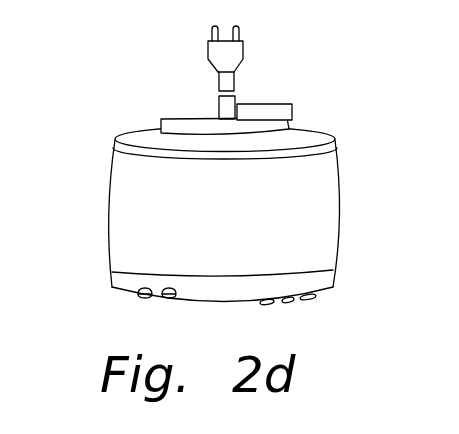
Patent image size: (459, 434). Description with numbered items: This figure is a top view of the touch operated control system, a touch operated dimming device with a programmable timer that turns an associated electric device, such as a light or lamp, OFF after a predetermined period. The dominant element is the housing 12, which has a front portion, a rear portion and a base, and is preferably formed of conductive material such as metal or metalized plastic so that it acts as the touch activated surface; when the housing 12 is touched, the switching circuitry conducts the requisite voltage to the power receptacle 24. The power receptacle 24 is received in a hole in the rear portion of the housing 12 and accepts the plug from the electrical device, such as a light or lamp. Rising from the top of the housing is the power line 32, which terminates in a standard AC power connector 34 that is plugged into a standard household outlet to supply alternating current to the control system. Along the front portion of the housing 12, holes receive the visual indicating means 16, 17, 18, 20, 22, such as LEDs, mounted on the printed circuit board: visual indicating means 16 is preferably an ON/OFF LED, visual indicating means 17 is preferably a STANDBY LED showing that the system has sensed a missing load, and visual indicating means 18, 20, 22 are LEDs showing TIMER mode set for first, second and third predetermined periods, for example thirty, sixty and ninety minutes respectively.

The housing 12 is at (116, 192).
The visual indicating means 16 is at (143, 298).
The visual indicating means 17 is at (167, 298).
The visual indicating means 18 is at (262, 305).
The visual indicating means 20 is at (284, 303).
The visual indicating means 22 is at (316, 298).
The power receptacle 24 is at (270, 110).
The power line 32 is at (220, 80).
The AC power connector 34 is at (210, 57).